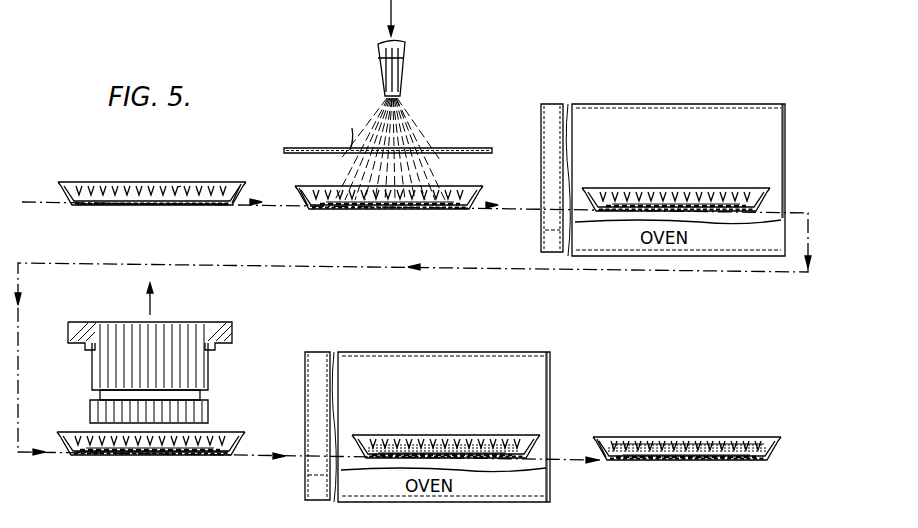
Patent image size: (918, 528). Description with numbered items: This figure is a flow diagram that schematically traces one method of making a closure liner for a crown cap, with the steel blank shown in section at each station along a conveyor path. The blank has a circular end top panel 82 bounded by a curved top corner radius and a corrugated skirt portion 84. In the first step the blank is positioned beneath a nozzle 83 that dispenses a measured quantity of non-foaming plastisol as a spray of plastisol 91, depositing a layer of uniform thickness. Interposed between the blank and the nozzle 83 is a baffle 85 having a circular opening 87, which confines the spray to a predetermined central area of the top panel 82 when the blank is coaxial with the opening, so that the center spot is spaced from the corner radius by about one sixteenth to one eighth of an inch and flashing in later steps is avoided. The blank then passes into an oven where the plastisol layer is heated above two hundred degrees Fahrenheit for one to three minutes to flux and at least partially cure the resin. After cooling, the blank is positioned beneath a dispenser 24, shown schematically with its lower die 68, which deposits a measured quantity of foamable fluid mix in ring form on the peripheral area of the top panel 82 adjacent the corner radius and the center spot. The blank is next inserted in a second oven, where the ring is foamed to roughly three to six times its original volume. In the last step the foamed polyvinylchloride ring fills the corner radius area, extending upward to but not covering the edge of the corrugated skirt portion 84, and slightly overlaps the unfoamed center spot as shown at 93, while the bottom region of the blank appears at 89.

The dispenser 24 is at (238, 333).
The lower die 68 is at (209, 422).
The circular end top panel 82 is at (147, 208).
The nozzle 83 is at (404, 72).
The corrugated skirt portion 84 is at (180, 184).
The baffle 85 is at (460, 148).
The circular opening 87 is at (350, 147).
The tray bottom 89 is at (80, 456).
The spray of plastisol 91 is at (410, 132).
The overlap of ring onto center spot 93 is at (632, 458).